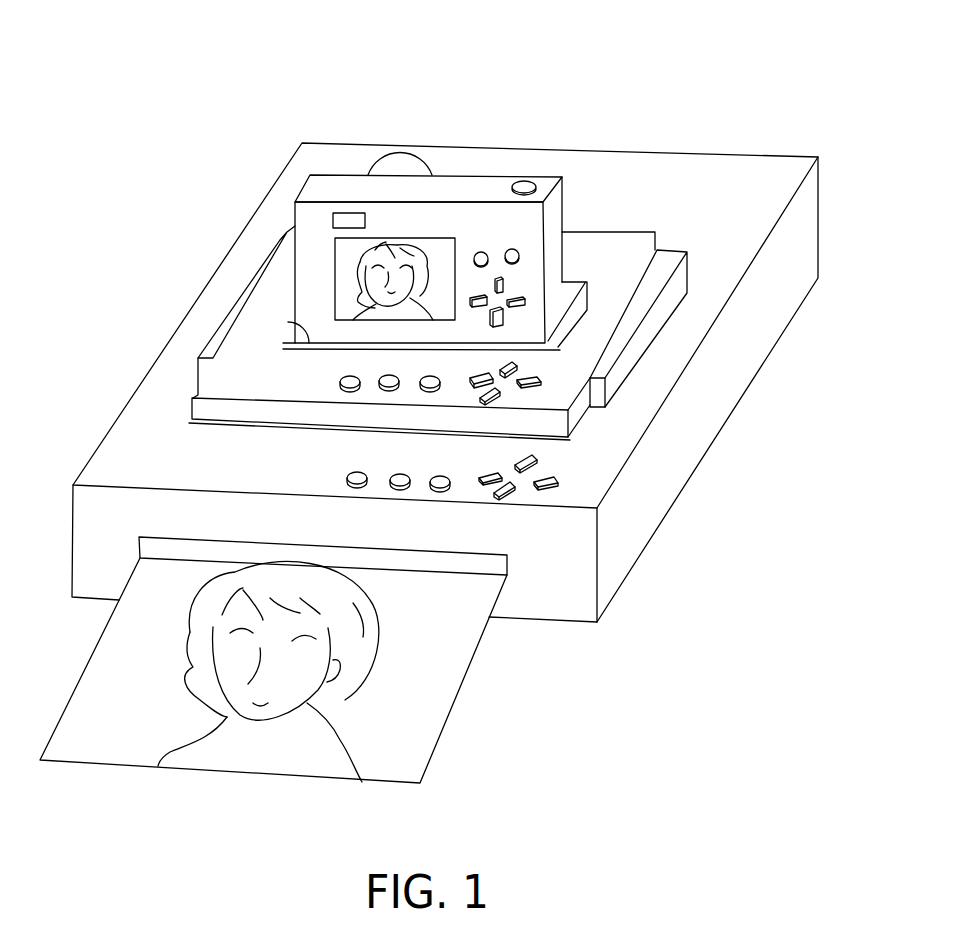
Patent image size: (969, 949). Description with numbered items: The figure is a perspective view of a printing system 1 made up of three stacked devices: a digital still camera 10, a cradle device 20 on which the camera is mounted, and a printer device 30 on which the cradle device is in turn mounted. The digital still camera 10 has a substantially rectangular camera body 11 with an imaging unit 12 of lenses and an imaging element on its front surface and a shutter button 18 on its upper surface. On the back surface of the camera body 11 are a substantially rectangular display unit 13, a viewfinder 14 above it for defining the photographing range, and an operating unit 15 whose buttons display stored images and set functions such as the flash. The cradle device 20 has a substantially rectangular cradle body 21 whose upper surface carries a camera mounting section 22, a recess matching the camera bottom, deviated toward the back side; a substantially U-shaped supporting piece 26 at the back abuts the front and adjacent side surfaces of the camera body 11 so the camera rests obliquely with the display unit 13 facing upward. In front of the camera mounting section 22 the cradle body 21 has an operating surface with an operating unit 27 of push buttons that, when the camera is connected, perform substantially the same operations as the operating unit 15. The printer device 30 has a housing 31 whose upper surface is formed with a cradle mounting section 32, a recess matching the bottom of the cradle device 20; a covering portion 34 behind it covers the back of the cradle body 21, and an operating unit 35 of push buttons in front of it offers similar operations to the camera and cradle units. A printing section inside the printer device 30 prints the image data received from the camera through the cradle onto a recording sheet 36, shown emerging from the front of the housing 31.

The printing system 1 is at (757, 90).
The digital still camera 10 is at (498, 162).
The camera body 11 is at (322, 178).
The imaging unit 12 is at (407, 161).
The display unit 13 is at (343, 272).
The viewfinder 14 is at (333, 219).
The operating unit 15 is at (512, 287).
The shutter button 18 is at (527, 183).
The cradle device 20 is at (580, 428).
The cradle body 21 is at (630, 242).
The camera mounting section 22 is at (288, 322).
The supporting piece 26 is at (582, 312).
The operating unit 27 is at (557, 380).
The printer device 30 is at (763, 382).
The housing 31 is at (640, 535).
The cradle mounting section 32 is at (218, 425).
The covering portion 34 is at (655, 323).
The operating unit 35 is at (515, 512).
The recording sheet 36 is at (445, 687).